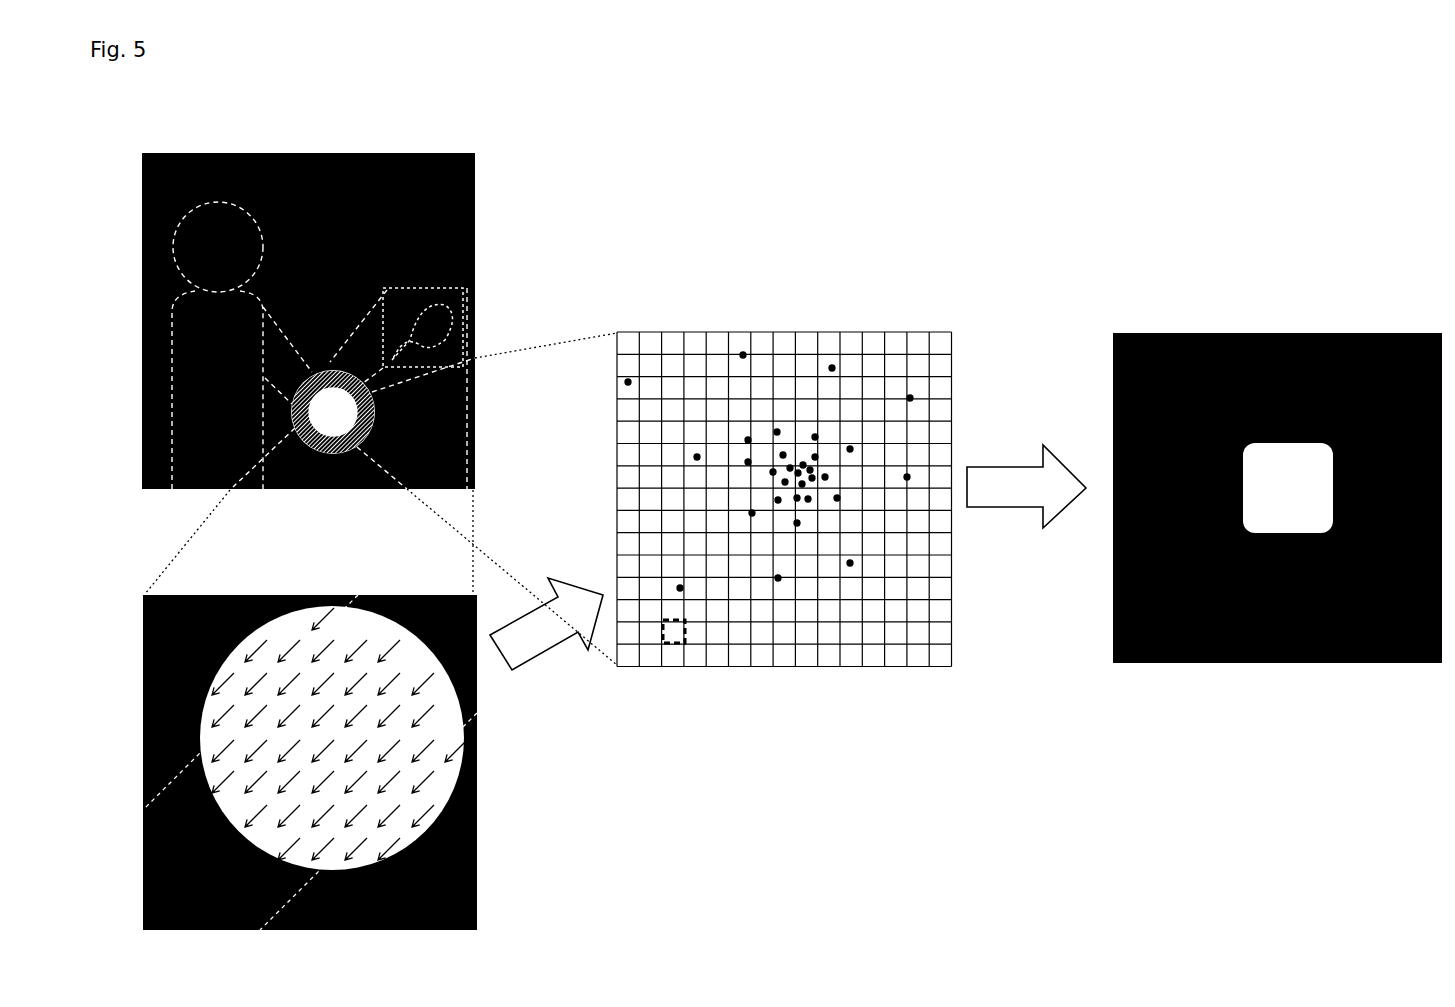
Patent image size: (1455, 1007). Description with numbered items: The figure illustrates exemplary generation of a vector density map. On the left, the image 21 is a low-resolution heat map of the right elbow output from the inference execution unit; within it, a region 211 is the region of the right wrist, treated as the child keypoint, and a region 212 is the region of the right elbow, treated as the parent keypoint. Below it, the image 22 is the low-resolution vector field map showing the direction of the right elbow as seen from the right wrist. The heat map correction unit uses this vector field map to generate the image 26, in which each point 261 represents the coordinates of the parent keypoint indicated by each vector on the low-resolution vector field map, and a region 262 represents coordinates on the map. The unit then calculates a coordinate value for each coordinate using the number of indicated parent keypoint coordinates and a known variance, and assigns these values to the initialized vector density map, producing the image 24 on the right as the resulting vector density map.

The image 21 is at (308, 288).
The region 211 is at (395, 290).
The region 212 is at (300, 436).
The image 22 is at (253, 595).
The image 26 is at (784, 501).
The point 261 is at (746, 352).
The region 262 is at (688, 667).
The image 24 is at (1258, 333).